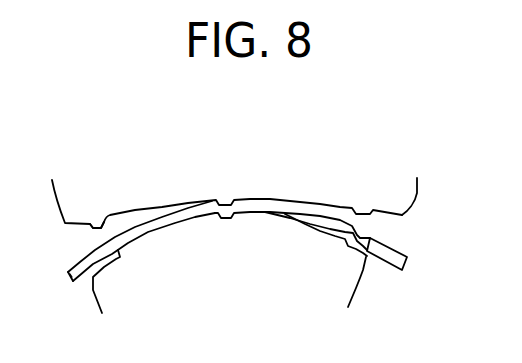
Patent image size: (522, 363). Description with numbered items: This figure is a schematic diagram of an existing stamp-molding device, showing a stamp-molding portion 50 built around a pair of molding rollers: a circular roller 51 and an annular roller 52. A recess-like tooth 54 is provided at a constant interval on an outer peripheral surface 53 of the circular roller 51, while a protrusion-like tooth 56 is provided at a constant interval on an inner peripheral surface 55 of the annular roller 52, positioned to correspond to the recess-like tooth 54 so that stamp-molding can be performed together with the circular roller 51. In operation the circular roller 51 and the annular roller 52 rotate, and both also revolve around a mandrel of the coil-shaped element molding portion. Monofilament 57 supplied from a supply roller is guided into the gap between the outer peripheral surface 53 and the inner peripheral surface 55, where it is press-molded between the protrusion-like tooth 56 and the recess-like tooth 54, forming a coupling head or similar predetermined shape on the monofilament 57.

The stamp-molding portion 50 is at (142, 148).
The circular roller 51 is at (345, 272).
The annular roller 52 is at (385, 173).
The outer peripheral surface 53 is at (148, 231).
The recess-like tooth 54 is at (122, 260).
The inner peripheral surface 55 is at (297, 199).
The protrusion-like tooth 56 is at (100, 221).
The monofilament 57 is at (74, 283).